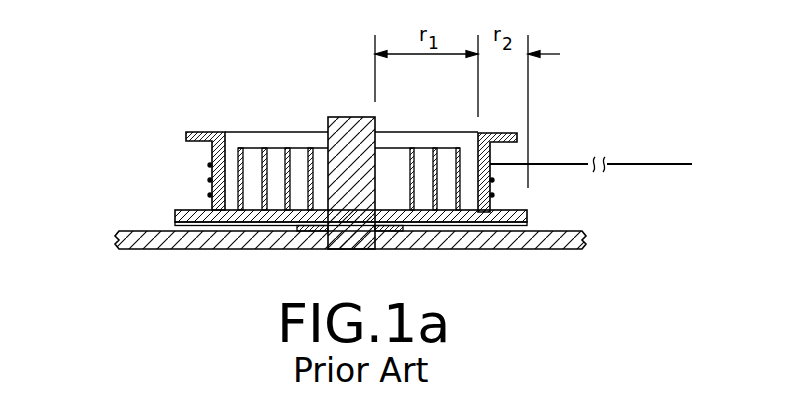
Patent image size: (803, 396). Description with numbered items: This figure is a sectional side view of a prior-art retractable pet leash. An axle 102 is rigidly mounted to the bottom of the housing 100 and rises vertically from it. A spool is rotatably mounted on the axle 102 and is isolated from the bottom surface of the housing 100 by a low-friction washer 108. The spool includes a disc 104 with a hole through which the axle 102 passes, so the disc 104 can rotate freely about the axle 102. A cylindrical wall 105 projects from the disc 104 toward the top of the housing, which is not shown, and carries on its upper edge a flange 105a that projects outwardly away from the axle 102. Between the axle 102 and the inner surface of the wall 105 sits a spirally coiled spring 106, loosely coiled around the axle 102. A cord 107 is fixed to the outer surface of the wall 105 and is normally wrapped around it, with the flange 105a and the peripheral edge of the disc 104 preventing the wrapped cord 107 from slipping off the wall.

The housing 100 is at (448, 250).
The axle 102 is at (355, 117).
The disc 104 is at (190, 210).
The cylindrical wall 105 is at (232, 131).
The flange 105a is at (505, 133).
The spirally coiled spring 106 is at (413, 147).
The cord 107 is at (575, 166).
The washer 108 is at (300, 247).